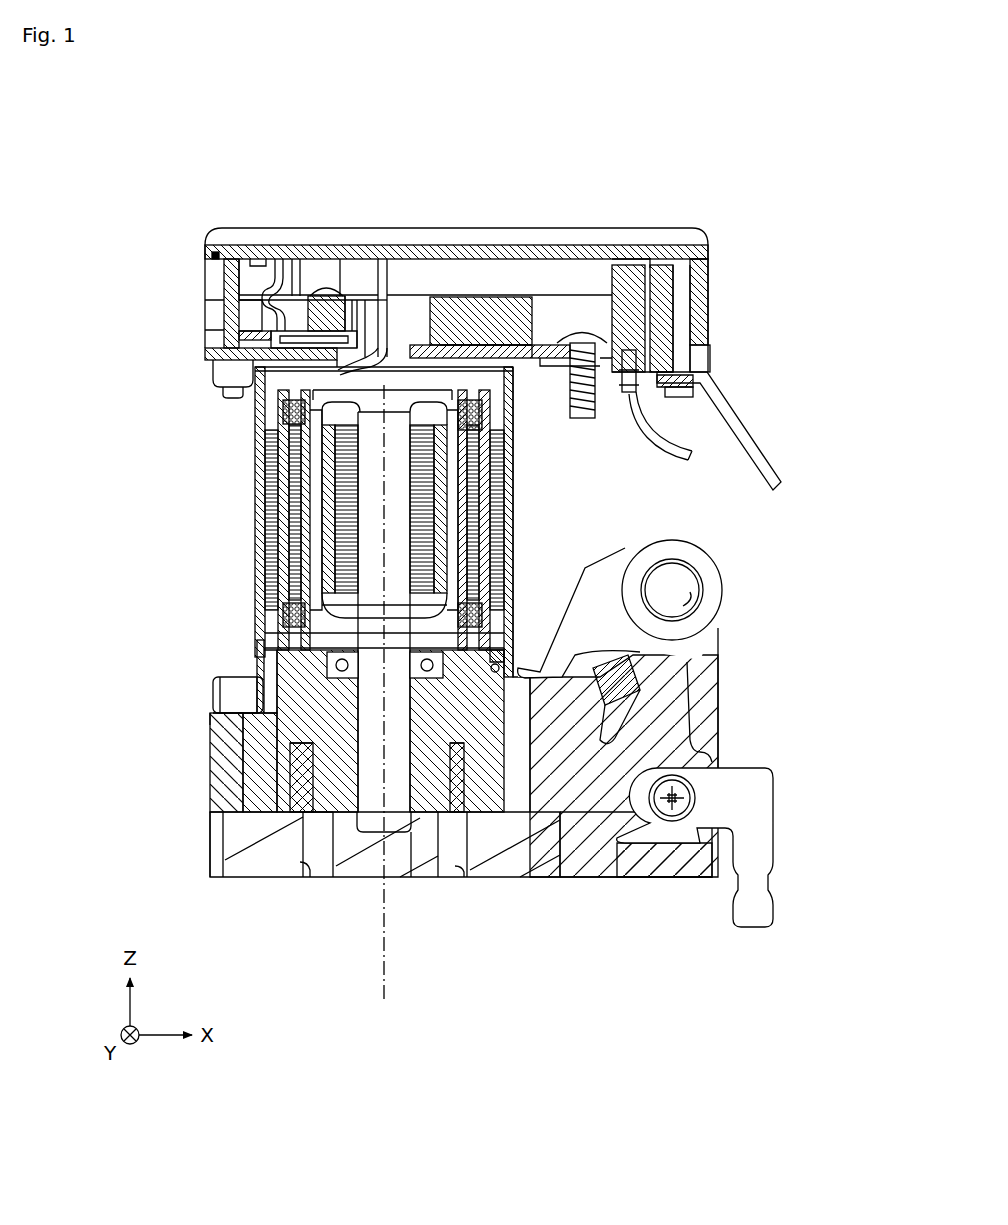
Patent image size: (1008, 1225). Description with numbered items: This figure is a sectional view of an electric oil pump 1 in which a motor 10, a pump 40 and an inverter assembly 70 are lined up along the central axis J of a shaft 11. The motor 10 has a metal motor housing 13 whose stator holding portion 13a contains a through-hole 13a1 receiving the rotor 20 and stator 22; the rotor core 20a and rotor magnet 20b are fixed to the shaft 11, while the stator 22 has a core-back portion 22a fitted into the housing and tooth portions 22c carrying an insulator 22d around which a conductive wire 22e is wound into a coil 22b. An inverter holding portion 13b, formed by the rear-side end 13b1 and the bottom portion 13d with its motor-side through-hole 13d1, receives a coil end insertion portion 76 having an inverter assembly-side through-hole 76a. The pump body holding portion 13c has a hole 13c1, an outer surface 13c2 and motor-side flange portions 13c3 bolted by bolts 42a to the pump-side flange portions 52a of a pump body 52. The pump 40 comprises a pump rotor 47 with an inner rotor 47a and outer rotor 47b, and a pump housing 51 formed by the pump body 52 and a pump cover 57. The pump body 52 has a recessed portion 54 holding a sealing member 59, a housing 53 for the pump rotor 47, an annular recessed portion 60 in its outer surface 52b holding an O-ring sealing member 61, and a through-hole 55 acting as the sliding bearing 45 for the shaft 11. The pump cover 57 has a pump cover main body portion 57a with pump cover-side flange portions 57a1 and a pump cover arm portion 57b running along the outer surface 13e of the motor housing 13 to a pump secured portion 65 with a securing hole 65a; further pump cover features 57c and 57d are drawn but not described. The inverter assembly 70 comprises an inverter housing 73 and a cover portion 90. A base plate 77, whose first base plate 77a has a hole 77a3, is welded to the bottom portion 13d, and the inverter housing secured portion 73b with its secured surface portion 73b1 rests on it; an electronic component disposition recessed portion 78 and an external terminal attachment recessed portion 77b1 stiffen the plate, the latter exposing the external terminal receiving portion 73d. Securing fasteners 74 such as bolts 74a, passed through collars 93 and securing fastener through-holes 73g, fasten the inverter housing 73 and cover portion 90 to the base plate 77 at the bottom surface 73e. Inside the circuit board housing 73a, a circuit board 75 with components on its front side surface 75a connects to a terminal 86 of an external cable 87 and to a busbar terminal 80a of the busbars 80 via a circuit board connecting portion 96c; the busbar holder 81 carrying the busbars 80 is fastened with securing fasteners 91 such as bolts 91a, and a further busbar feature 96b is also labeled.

The electric oil pump 1 is at (736, 212).
The motor 10 is at (175, 521).
The shaft 11 is at (340, 878).
The motor housing 13 is at (260, 486).
The stator holding portion 13a is at (262, 498).
The through-hole 13a1 is at (266, 466).
The inverter holding portion 13b is at (170, 390).
The rear-side end 13b1 is at (262, 402).
The pump body holding portion 13c is at (260, 672).
The hole 13c1 is at (580, 722).
The outer surface 13c2 is at (222, 706).
The motor-side flange portions 13c3 is at (228, 716).
The bottom portion 13d is at (240, 392).
The motor-side through-hole 13d1 is at (423, 320).
The outer surface 13e is at (515, 548).
The rotor 20 is at (255, 596).
The rotor core 20a is at (430, 520).
The rotor magnet 20b is at (445, 496).
The stator 22 is at (272, 600).
The core-back portion 22a is at (272, 566).
The coil 22b is at (285, 410).
The tooth portions 22c is at (270, 520).
The insulator (bobbin) 22d is at (272, 546).
The conductive wire 22e is at (272, 616).
The pump 40 is at (208, 726).
The bolts 42a is at (232, 690).
The sliding bearing 45 is at (390, 709).
The pump rotor 47 is at (228, 846).
The inner rotor 47a is at (332, 862).
The outer rotor 47b is at (300, 875).
The pump housing 51 is at (148, 810).
The pump body 52 is at (545, 812).
The pump-side flange portions 52a is at (288, 776).
The outer surface 52b is at (268, 682).
The housing 53 is at (470, 812).
The recessed portion 54 is at (255, 735).
The through-hole 55 is at (396, 882).
The pump cover 57 is at (205, 875).
The pump cover main body portion 57a is at (415, 878).
The pump cover-side flange portions 57a1 is at (225, 851).
The pump cover arm portion 57b is at (620, 878).
The base step 57c is at (310, 878).
The base recess 57d is at (460, 878).
The sealing member 59 is at (300, 790).
The annular recessed portion 60 is at (498, 660).
The sealing member 61 is at (608, 686).
The pump secured portion 65 is at (733, 562).
The securing hole 65a is at (695, 612).
The inverter assembly 70 is at (205, 222).
The inverter housing 73 is at (200, 262).
The circuit board housing 73a is at (358, 275).
The inverter housing secured portion 73b is at (200, 345).
The secured surface portion 73b1 is at (300, 290).
The external terminal receiving portion 73d is at (636, 268).
The bottom surface 73e is at (508, 343).
The securing fastener through-holes 73g is at (618, 345).
The securing fasteners 74 is at (235, 228).
The bolts 74a is at (583, 415).
The circuit board 75 is at (577, 325).
The front side surface 75a is at (490, 330).
The coil end insertion portion 76 is at (345, 292).
The inverter assembly-side through-hole 76a is at (432, 300).
The base plate 77 is at (240, 335).
The first base plate 77a is at (262, 292).
The hole 77a3 is at (458, 298).
The external terminal attachment recessed portion 77b1 is at (556, 360).
The electronic component disposition recessed portion 78 is at (235, 372).
The busbars 80 is at (290, 290).
The busbar terminal 80a is at (319, 210).
The busbar holder 81 is at (262, 318).
The terminal 86 is at (668, 265).
The external cable 87 is at (675, 456).
The cover portion 90 is at (712, 247).
The securing fasteners 91 is at (335, 290).
The bolts 91a is at (318, 217).
The collars 93 is at (605, 385).
The lead portion 96b is at (390, 295).
The circuit board connecting portion 96c is at (258, 243).
The central axis J is at (386, 882).